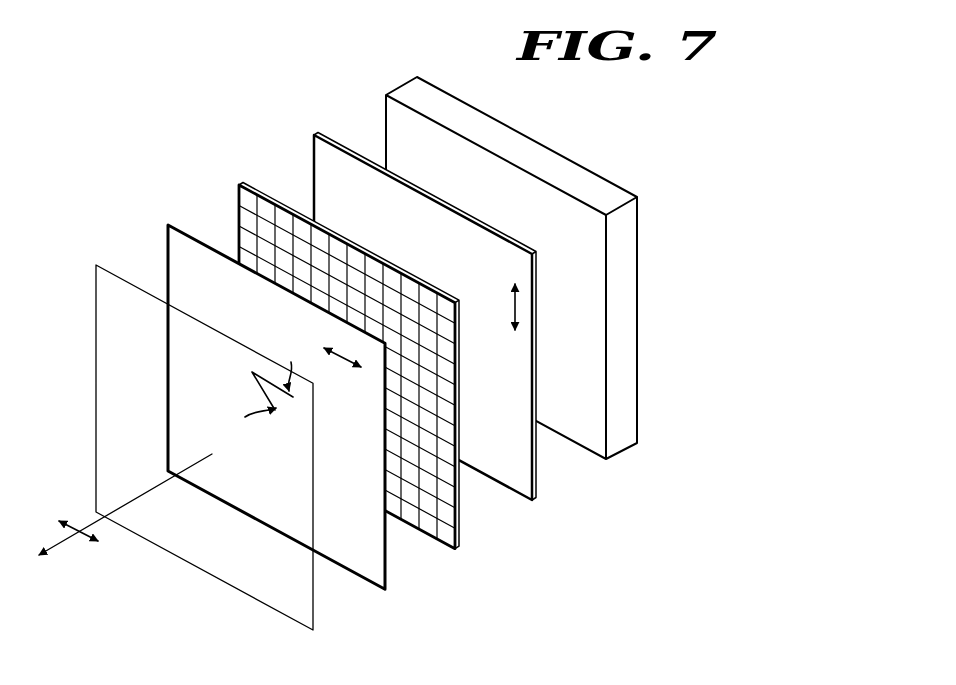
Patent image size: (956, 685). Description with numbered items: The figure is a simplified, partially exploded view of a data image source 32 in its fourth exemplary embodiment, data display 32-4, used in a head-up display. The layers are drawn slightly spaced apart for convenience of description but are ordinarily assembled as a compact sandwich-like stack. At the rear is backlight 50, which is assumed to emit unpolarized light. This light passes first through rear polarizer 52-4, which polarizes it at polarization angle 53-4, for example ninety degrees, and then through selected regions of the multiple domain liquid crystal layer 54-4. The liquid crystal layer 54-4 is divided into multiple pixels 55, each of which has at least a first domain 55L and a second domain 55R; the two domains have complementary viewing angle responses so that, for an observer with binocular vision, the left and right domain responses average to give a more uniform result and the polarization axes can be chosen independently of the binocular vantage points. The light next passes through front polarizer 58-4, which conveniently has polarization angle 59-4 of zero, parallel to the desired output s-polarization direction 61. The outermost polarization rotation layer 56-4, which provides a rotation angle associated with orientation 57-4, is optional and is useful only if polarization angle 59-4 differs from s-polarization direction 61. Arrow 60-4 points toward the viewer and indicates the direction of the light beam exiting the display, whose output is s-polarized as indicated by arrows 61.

The data image source 32 is at (124, 174).
The data display 32-4 is at (563, 624).
The backlight 50 is at (623, 435).
The rear polarizer 52-4 is at (536, 493).
The polarization angle 53-4 is at (513, 308).
The liquid crystal layer 54-4 is at (355, 372).
The pixel 55 is at (282, 218).
The second domain 55R is at (243, 197).
The first domain 55L is at (253, 205).
The polarization rotation layer 56-4 is at (313, 615).
The orientation 57-4 is at (285, 402).
The front polarizer 58-4 is at (386, 575).
The polarization angle 59-4 is at (340, 358).
The arrow 60-4 is at (58, 547).
The s-polarization direction 61 is at (78, 527).